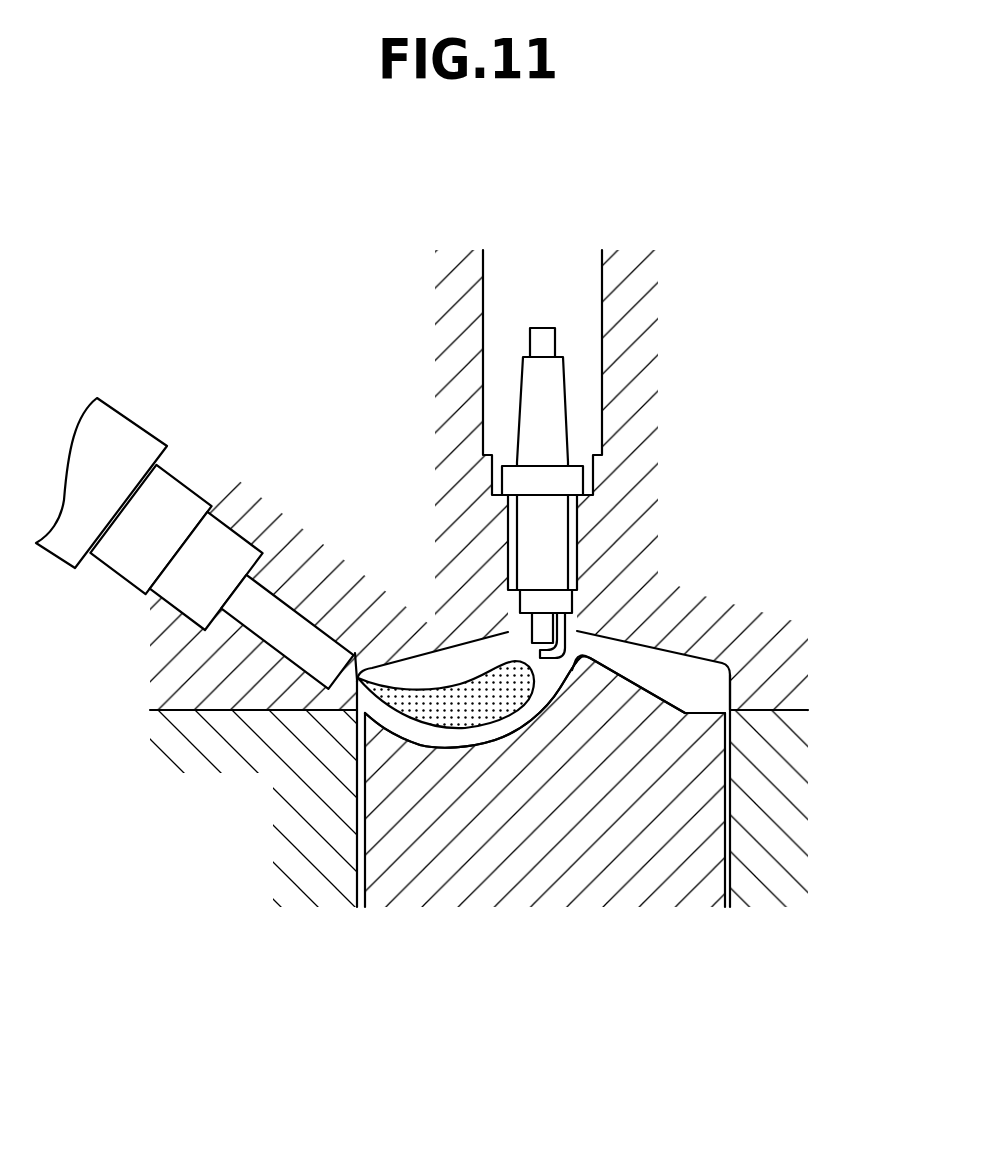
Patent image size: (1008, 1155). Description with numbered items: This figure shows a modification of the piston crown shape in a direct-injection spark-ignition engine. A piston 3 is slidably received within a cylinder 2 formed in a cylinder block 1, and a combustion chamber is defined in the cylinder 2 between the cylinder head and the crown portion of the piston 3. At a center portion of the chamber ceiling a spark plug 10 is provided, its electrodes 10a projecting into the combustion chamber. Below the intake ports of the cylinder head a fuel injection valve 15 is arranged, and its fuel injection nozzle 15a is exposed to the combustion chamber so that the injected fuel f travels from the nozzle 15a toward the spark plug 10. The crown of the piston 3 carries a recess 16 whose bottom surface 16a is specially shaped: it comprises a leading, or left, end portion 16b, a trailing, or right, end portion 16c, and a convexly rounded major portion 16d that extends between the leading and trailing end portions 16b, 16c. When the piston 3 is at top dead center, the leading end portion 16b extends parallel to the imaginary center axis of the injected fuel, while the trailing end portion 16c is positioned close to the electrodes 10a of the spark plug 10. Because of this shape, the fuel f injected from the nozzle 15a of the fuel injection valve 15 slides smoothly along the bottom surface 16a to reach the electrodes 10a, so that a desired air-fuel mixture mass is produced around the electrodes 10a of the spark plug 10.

The cylinder block 1 is at (755, 848).
The cylinder 2 is at (727, 760).
The piston 3 is at (432, 848).
The spark plug 10 is at (553, 523).
The electrodes 10a is at (530, 658).
The fuel injection valve 15 is at (183, 480).
The fuel injection nozzle 15a is at (293, 640).
The recess 16 is at (548, 688).
The bottom surface 16a is at (469, 746).
The leading end portion 16b is at (387, 720).
The trailing end portion 16c is at (582, 645).
The convexly rounded major portion 16d is at (514, 729).
The fuel spray f is at (423, 698).